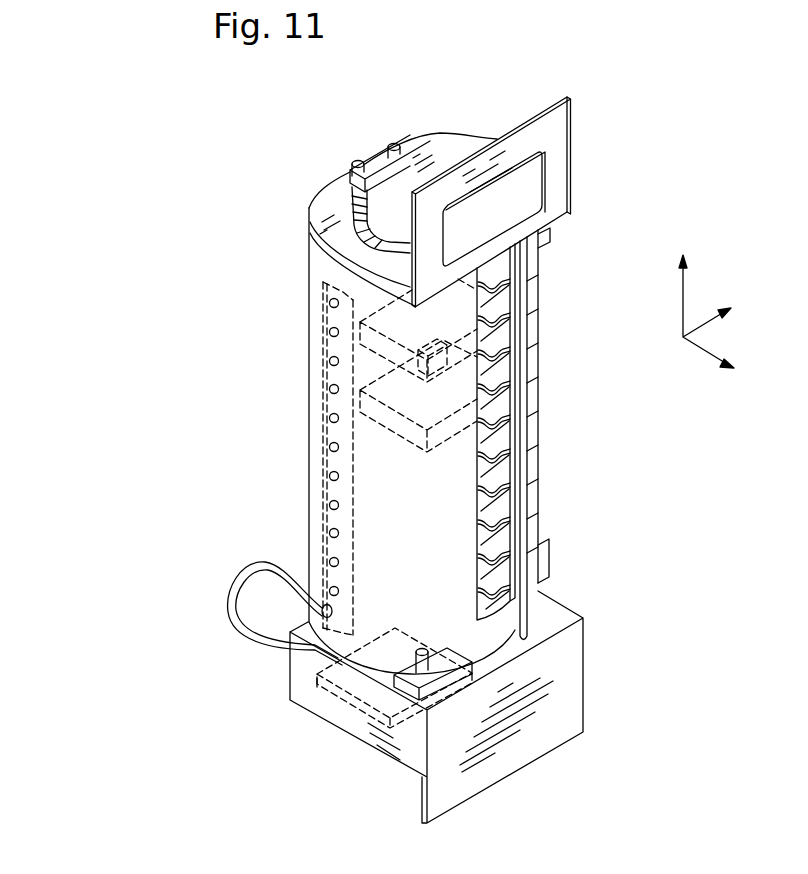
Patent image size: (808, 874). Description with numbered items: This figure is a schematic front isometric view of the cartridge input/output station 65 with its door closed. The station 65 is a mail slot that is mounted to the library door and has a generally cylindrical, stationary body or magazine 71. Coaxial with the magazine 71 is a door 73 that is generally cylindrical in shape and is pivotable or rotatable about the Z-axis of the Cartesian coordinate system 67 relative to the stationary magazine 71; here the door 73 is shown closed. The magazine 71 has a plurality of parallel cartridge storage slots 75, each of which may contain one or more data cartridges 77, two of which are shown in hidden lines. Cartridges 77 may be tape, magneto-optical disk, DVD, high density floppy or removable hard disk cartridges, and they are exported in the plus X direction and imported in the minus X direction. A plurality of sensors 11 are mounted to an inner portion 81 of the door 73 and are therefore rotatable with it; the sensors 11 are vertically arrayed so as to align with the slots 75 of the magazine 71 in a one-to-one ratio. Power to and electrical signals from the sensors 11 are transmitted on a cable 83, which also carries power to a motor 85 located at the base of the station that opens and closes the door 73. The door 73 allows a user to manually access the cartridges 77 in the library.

The cartridge input/output station 65 is at (263, 357).
The sensors 11 is at (331, 506).
The inner portion of door 81 is at (353, 538).
The data cartridges 77 is at (393, 448).
The cartridge storage slots 75 is at (508, 428).
The door 73 is at (520, 541).
The magazine 71 is at (541, 302).
The motor 85 is at (357, 703).
The cable 83 is at (228, 627).
The Cartesian coordinate system 67 is at (682, 318).